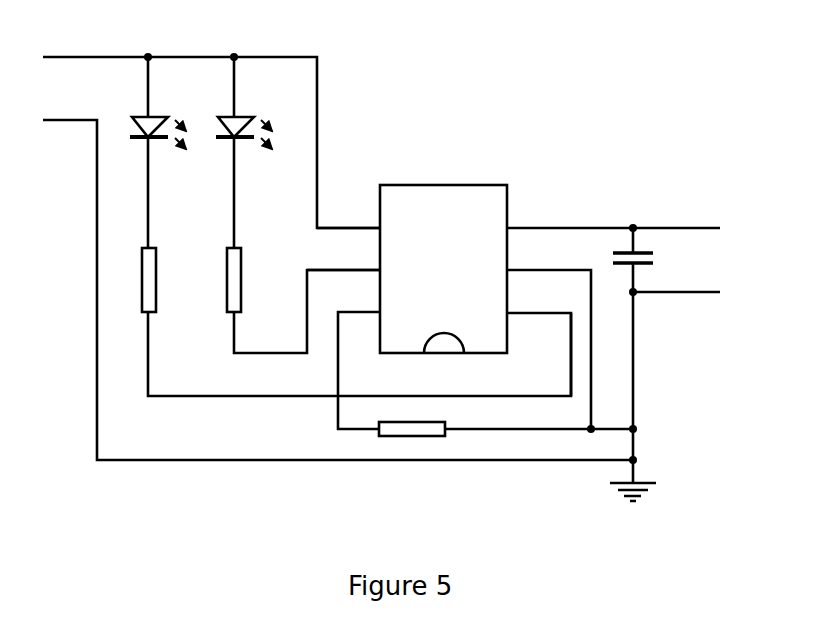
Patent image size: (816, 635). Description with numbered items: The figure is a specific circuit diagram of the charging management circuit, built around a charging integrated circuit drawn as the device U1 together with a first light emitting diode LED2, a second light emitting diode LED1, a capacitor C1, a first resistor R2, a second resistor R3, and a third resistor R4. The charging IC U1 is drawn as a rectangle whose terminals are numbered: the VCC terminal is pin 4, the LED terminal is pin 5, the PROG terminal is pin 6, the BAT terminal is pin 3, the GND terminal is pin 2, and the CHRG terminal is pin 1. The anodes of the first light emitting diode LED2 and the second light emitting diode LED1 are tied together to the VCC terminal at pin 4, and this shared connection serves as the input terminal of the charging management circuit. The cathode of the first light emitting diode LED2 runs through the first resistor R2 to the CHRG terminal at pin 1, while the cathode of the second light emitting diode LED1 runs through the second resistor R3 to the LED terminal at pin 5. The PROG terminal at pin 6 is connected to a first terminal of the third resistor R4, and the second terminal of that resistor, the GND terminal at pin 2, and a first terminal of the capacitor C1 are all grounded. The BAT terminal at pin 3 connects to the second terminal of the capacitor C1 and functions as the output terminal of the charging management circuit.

The second light emitting diode LED1 is at (255, 152).
The first light emitting diode LED2 is at (168, 152).
The first resistor R2 is at (356, 322).
The second resistor R3 is at (303, 300).
The third resistor R4 is at (508, 419).
The charger IC VA7204 U1 is at (443, 260).
The capacitor C1 is at (655, 260).
The pin 1 CHRG 1 is at (539, 345).
The pin 2 GND 2 is at (549, 340).
The pin 3 BAT 3 is at (613, 219).
The pin 4 VCC 4 is at (348, 219).
The pin 5 LED 5 is at (343, 261).
The pin 6 PROG 6 is at (359, 361).